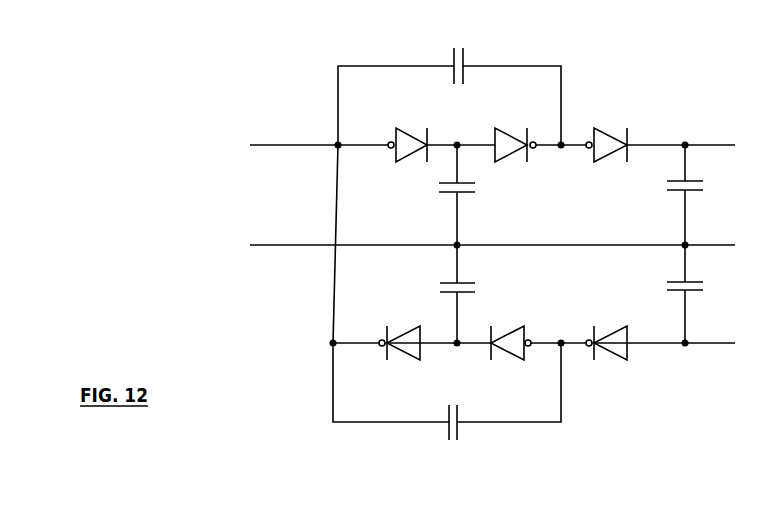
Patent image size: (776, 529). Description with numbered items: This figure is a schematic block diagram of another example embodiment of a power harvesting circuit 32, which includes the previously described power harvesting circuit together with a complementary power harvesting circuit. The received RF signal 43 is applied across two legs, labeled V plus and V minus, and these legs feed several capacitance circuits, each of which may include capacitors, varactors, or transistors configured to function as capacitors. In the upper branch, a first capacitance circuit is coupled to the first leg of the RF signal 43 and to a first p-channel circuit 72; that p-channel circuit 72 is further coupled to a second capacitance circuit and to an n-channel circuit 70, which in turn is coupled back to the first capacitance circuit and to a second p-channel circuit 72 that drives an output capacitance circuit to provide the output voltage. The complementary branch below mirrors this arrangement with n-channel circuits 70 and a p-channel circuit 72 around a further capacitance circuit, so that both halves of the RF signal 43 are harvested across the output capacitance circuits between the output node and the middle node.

The p-channel circuit 72 is at (419, 123).
The n-channel circuit 70 is at (523, 123).
The RF signal 43 is at (293, 195).
The power harvesting circuit 32 is at (408, 231).